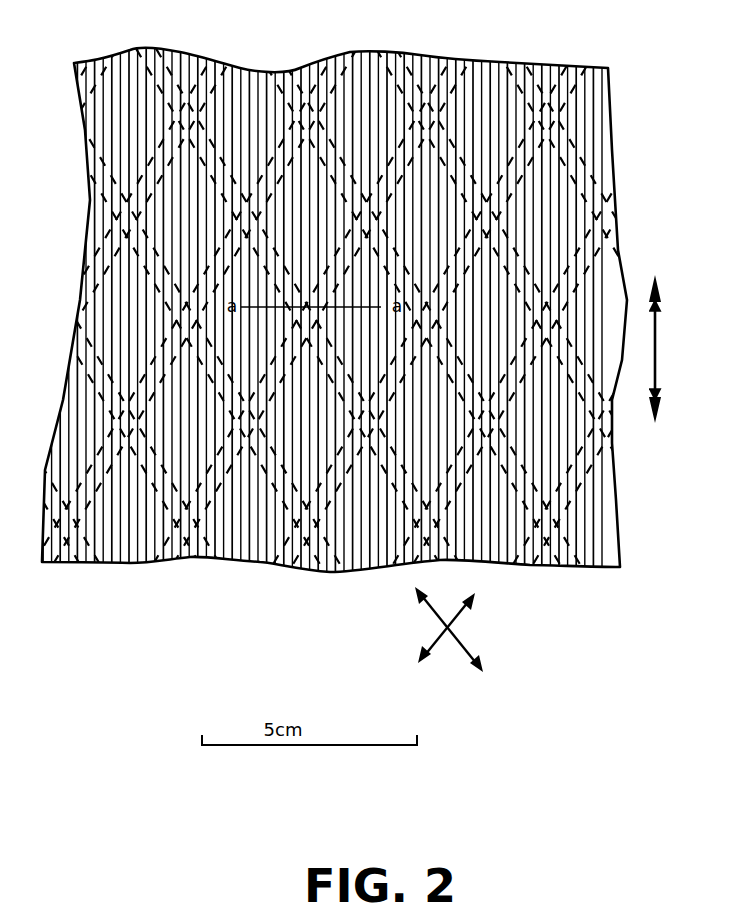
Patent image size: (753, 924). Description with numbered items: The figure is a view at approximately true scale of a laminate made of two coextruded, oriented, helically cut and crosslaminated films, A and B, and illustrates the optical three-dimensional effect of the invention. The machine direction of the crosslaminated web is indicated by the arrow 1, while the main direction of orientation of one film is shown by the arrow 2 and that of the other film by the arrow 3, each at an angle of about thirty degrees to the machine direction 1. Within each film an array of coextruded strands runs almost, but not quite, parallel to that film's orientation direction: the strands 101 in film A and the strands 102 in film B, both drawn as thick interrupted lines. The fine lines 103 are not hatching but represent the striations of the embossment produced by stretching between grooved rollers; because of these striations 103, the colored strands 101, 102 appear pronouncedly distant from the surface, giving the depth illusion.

The coextruded strands 101 is at (279, 545).
The coextruded strands 102 is at (175, 543).
The striated embossment 103 is at (220, 73).
The machine direction arrow 1 is at (657, 341).
The main direction of orientation arrow 2 is at (459, 618).
The main direction of orientation arrow 3 is at (430, 613).